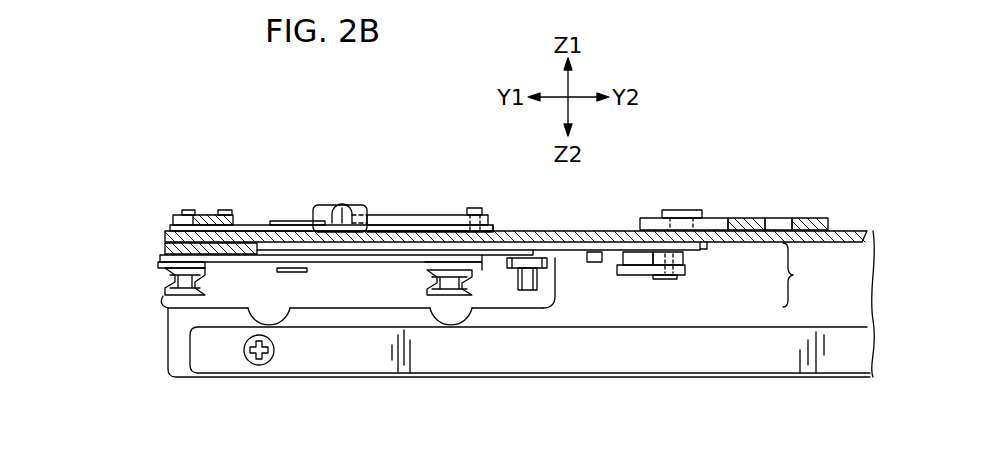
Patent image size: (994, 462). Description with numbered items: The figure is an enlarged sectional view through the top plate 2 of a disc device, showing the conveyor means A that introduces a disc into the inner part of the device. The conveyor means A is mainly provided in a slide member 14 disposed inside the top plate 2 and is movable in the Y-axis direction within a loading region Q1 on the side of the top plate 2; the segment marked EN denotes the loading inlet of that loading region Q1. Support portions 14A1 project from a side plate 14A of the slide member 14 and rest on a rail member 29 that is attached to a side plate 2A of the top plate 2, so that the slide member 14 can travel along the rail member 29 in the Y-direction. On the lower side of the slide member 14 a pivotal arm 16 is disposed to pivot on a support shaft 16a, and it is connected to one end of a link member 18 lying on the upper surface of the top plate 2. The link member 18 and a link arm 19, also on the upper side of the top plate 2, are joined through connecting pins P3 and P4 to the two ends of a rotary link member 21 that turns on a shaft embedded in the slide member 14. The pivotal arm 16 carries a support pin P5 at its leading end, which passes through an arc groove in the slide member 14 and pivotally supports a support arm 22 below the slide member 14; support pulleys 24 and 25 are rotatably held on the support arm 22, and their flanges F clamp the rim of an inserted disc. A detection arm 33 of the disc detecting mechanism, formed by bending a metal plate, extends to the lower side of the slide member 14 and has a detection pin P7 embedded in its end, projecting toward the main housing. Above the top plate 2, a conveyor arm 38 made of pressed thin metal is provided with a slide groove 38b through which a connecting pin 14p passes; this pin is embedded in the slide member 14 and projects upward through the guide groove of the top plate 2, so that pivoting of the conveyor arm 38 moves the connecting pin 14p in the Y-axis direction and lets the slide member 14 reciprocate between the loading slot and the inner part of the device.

The top plate 2 is at (605, 231).
The side plate of the top plate 2A is at (178, 377).
The slide member 14 is at (700, 251).
The side plate of the slide member 14A is at (552, 298).
The support portions 14A1 is at (270, 327).
The connecting pin 14p is at (677, 210).
The pivotal arm 16 is at (637, 275).
The support shaft 16a is at (667, 279).
The link member 18 is at (416, 215).
The link arm 19 is at (212, 217).
The rotary link member 21 is at (247, 225).
The support arm 22 is at (345, 262).
The support pulley 24 is at (162, 300).
The support pulley 25 is at (428, 289).
The rail member 29 is at (630, 377).
The detection arm 33 is at (533, 258).
The conveyor arm 38 is at (719, 218).
The slide groove 38b is at (778, 218).
The conveyor means A is at (384, 206).
The loading inlet EN is at (160, 283).
The flanges F is at (205, 283).
The connecting pin P3 is at (470, 208).
The connecting pin P4 is at (188, 210).
The support pin P5 is at (283, 272).
The detection pin P7 is at (526, 290).
The loading region Q1 is at (807, 275).